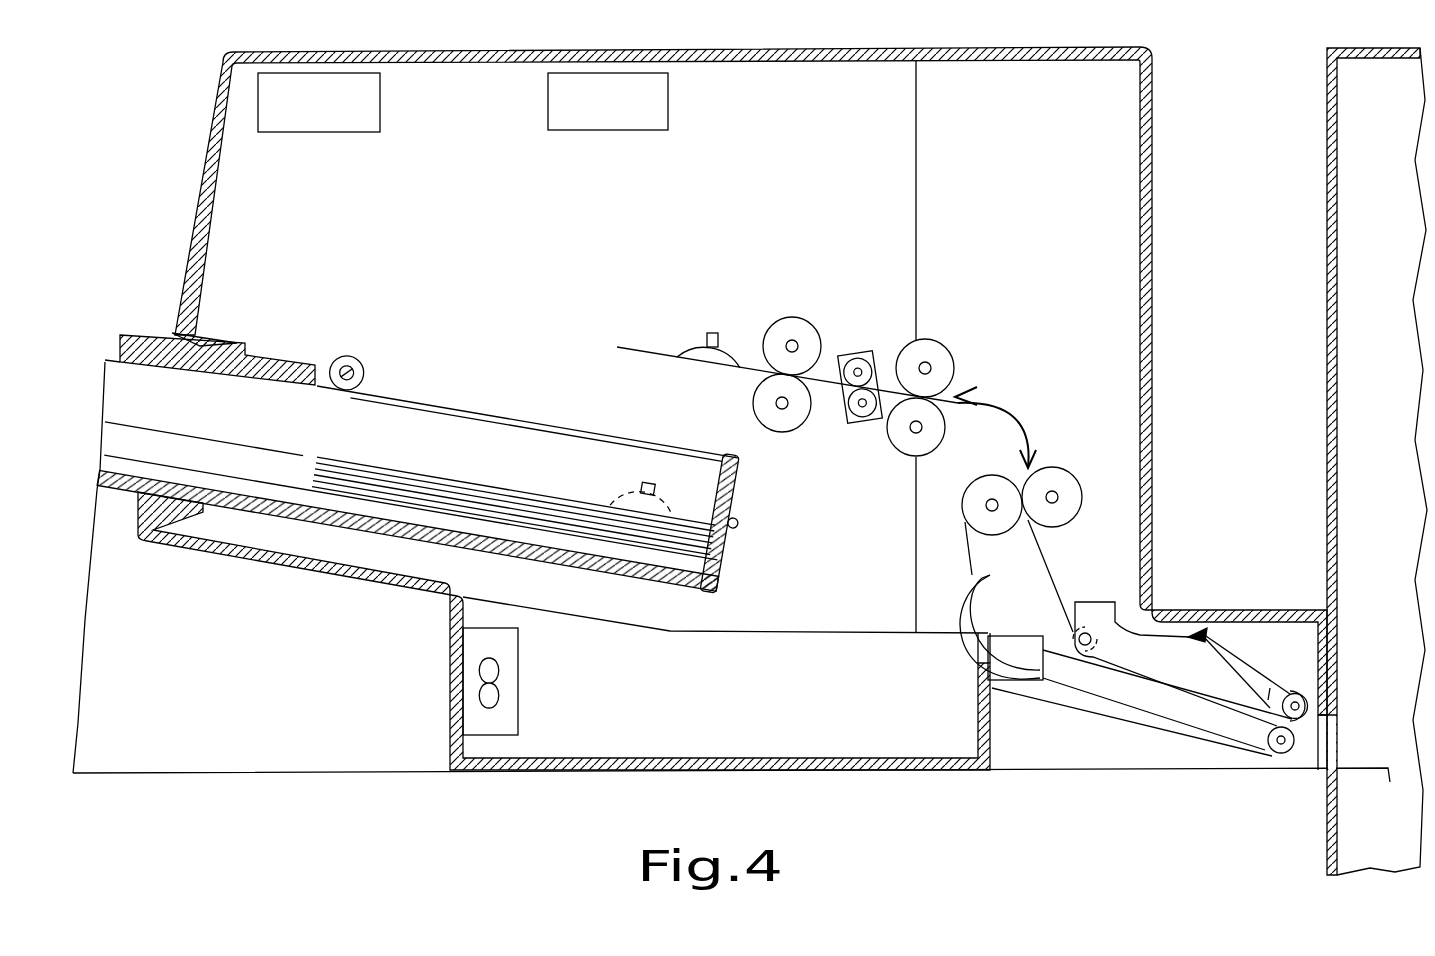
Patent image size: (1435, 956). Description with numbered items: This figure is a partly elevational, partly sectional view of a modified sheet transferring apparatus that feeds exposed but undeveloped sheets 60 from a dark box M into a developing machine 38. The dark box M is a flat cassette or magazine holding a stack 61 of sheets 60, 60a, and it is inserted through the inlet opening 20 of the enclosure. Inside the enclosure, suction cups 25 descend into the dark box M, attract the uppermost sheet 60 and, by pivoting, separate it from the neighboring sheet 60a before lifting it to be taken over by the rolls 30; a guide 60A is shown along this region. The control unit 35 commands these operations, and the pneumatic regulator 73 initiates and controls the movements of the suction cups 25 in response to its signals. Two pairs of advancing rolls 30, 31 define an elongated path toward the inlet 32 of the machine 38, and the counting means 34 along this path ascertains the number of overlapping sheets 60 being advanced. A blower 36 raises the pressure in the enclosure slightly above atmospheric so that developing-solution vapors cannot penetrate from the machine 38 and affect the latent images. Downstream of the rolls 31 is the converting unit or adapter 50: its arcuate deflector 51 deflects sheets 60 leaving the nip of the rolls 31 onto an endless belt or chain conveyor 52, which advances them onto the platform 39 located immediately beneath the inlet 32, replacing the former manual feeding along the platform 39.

The control unit 35 is at (305, 119).
The pneumatic regulator 73 is at (594, 119).
The converting unit 50 is at (1002, 167).
The developing machine 38 is at (1370, 119).
The inlet opening 20 is at (250, 345).
The sheets 60 is at (373, 465).
The neighboring sheets 60a is at (437, 480).
The stack of sheets 61 is at (530, 470).
The guide plate 60A is at (640, 343).
The suction cup 25 is at (693, 345).
The pair of advancing rolls 30 is at (792, 316).
The ascertaining or counting means 34 is at (862, 358).
The pair of advancing rolls 31 is at (945, 342).
The arcuate deflector 51 is at (993, 407).
The endless belt or chain conveyor 52 is at (1053, 582).
The blower 36 is at (508, 678).
The inlet 32 is at (1338, 735).
The platform 39 is at (1120, 769).
The dark box M is at (117, 487).